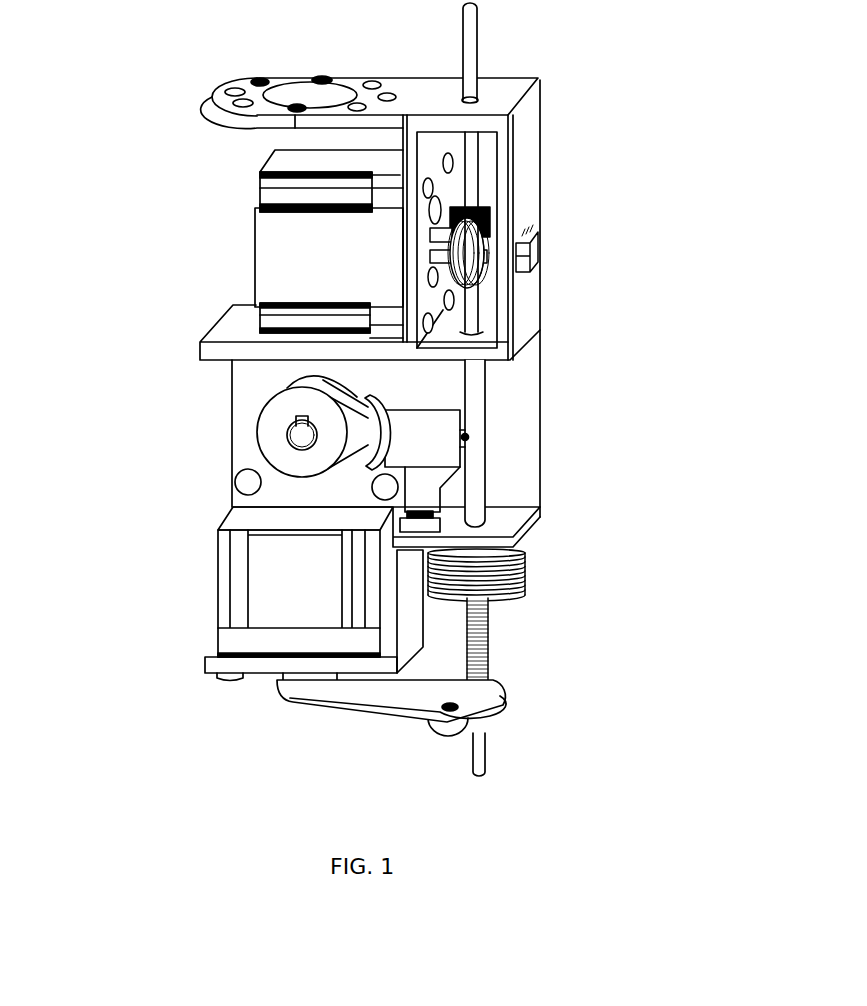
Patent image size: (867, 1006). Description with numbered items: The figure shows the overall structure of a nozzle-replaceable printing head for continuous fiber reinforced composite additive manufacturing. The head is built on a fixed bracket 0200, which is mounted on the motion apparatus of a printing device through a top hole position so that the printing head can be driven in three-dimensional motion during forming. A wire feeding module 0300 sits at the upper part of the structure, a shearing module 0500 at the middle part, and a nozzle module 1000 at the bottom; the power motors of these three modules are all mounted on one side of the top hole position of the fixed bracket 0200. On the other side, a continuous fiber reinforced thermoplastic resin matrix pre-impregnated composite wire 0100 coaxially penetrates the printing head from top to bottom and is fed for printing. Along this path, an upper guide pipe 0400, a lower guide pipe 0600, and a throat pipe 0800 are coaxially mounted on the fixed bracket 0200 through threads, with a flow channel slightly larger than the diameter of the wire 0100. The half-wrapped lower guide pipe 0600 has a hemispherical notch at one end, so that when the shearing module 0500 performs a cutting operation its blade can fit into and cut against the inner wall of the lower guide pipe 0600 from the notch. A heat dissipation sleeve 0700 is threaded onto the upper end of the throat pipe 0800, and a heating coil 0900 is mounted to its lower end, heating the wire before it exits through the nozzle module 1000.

The pre-impregnated composite wire 0100 is at (478, 48).
The fixed bracket 0200 is at (538, 259).
The wire feeding module 0300 is at (263, 242).
The upper guide pipe 0400 is at (478, 393).
The shearing module 0500 is at (260, 427).
The lower guide pipe 0600 is at (478, 480).
The heat dissipation sleeve 0700 is at (530, 580).
The throat pipe 0800 is at (492, 610).
The heating coil 0900 is at (492, 653).
The nozzle module 1000 is at (263, 602).